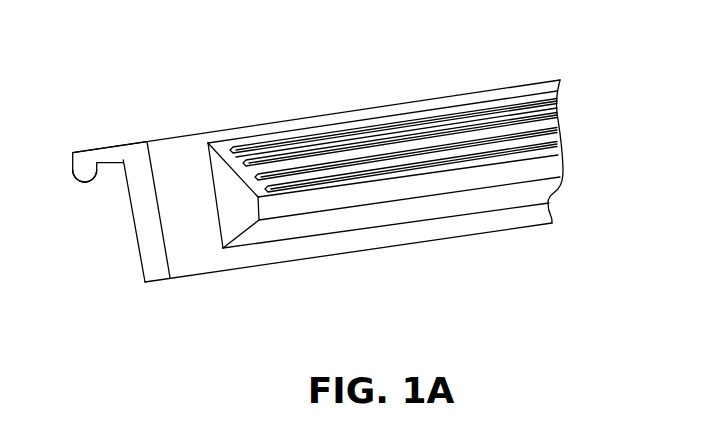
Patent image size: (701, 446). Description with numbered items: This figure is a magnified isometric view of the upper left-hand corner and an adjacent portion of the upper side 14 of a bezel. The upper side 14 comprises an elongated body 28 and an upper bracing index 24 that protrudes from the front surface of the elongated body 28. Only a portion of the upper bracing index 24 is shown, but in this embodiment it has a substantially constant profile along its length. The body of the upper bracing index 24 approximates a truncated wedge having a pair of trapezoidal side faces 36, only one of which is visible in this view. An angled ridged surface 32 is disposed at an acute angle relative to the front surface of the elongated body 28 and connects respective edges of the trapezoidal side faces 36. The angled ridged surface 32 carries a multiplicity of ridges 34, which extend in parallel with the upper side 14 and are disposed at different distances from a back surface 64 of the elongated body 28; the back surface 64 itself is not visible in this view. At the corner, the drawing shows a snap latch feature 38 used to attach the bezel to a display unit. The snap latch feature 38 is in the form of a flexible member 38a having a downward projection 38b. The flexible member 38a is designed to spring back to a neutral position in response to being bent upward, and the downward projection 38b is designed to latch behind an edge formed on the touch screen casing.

The upper side 14 is at (434, 254).
The upper bracing index 24 is at (513, 212).
The elongated body 28 is at (320, 259).
The angled ridged surface 32 is at (415, 100).
The ridges 34 is at (527, 125).
The trapezoidal side faces 36 is at (235, 217).
The snap latch feature 38 is at (76, 136).
The flexible member 38a is at (110, 147).
The downward projection 38b is at (85, 172).
The back surface 64 is at (137, 253).